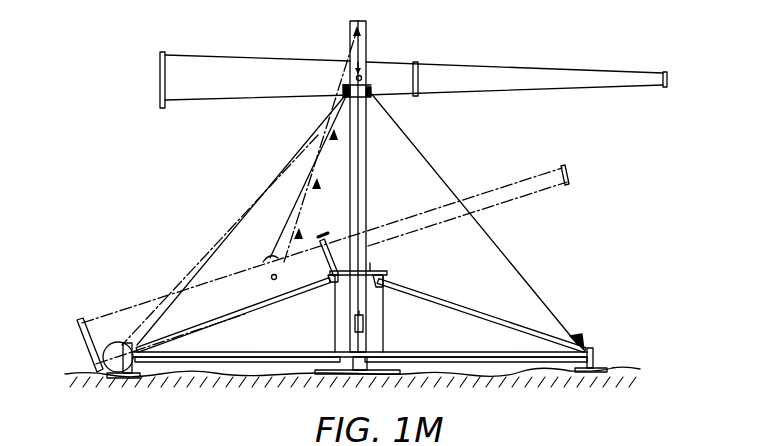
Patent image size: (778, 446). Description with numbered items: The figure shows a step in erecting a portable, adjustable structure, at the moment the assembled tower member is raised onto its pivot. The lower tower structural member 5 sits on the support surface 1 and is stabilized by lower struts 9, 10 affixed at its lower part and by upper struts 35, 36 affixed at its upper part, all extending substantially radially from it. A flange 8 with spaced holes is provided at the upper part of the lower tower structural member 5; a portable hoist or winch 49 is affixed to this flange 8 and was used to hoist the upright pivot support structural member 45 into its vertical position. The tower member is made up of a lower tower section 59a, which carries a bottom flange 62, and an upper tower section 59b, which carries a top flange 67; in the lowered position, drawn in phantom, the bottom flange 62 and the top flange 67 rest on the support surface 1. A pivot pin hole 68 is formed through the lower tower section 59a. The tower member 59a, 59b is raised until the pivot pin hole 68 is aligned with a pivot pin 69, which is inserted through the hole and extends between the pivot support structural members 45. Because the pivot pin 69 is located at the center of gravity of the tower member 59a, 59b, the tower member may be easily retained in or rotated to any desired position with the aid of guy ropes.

The support surface 1 is at (608, 362).
The lower tower structural member 5 is at (340, 320).
The flange 8 is at (387, 276).
The lower strut 9 is at (265, 363).
The lower strut 10 is at (498, 364).
The upper strut 35 is at (235, 317).
The upper strut 36 is at (445, 310).
The pivot support structural member 45 is at (368, 192).
The portable hoist or winch 49 is at (363, 325).
The lower tower section 59a is at (291, 57).
The upper tower section 59b is at (546, 33).
The bottom flange 62 is at (160, 80).
The top flange 67 is at (667, 80).
The pivot pin hole 68 is at (271, 277).
The pivot pin 69 is at (362, 77).